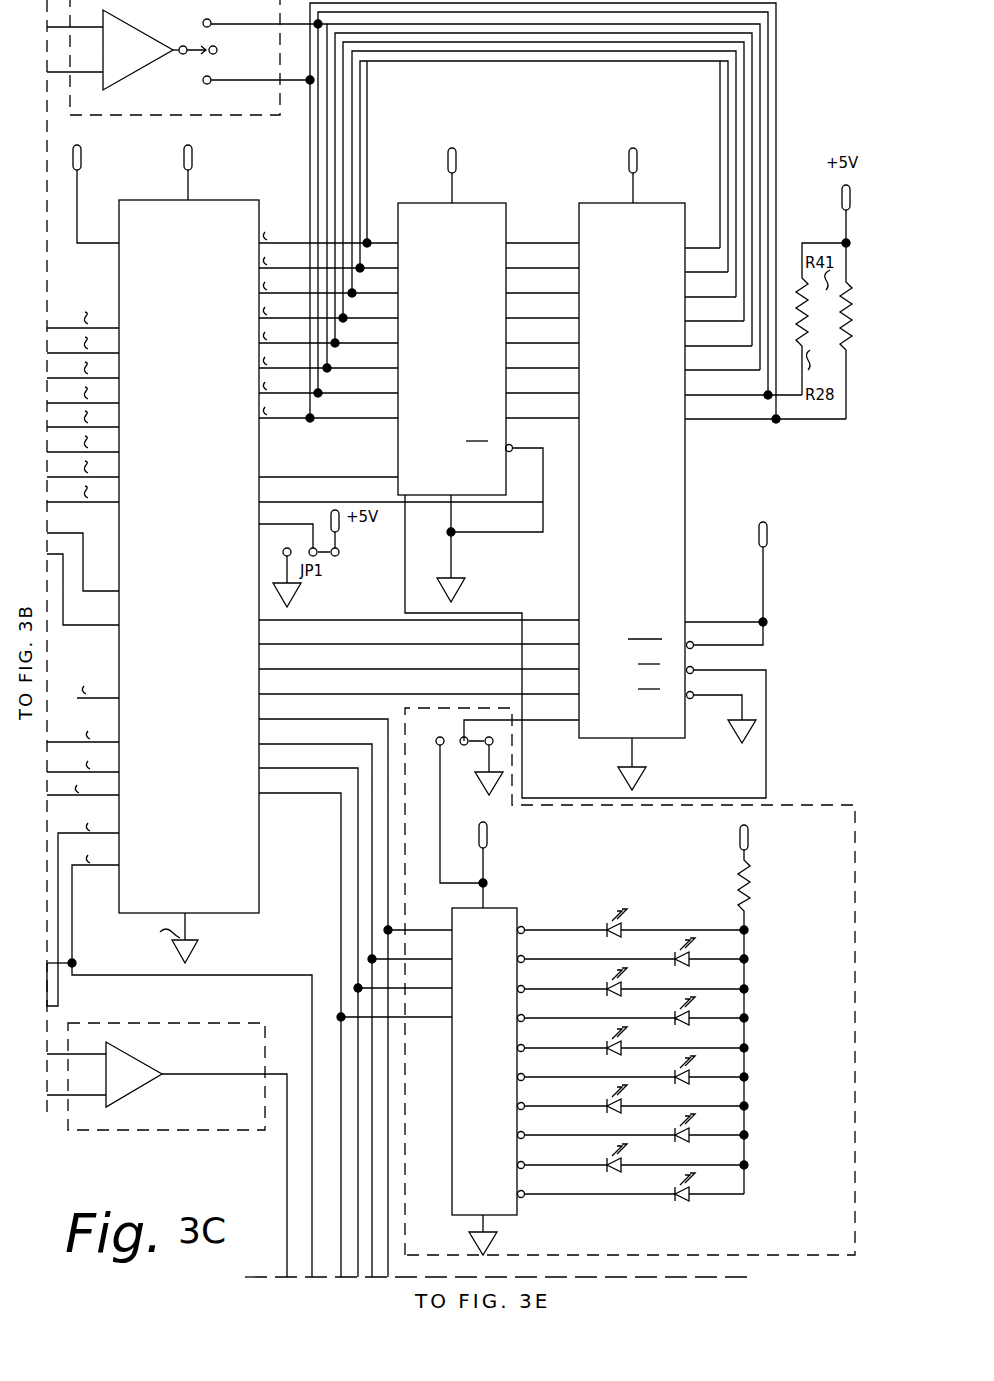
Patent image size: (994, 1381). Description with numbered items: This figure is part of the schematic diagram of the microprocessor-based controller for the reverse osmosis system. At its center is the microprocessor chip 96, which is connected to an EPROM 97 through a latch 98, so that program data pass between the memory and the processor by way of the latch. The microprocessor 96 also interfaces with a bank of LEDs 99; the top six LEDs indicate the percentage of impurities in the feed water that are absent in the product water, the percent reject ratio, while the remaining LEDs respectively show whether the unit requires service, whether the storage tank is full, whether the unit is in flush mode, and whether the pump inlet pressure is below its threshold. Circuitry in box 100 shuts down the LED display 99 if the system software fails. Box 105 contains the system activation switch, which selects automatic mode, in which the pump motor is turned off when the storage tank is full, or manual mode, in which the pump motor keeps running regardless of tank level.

The microprocessor chip 96 is at (243, 200).
The EPROM 97 is at (704, 457).
The latch 98 is at (497, 203).
The bank of LEDs 99 is at (798, 806).
The LED display shutdown circuitry 100 is at (190, 1132).
The system activation switch box 105 is at (160, 105).